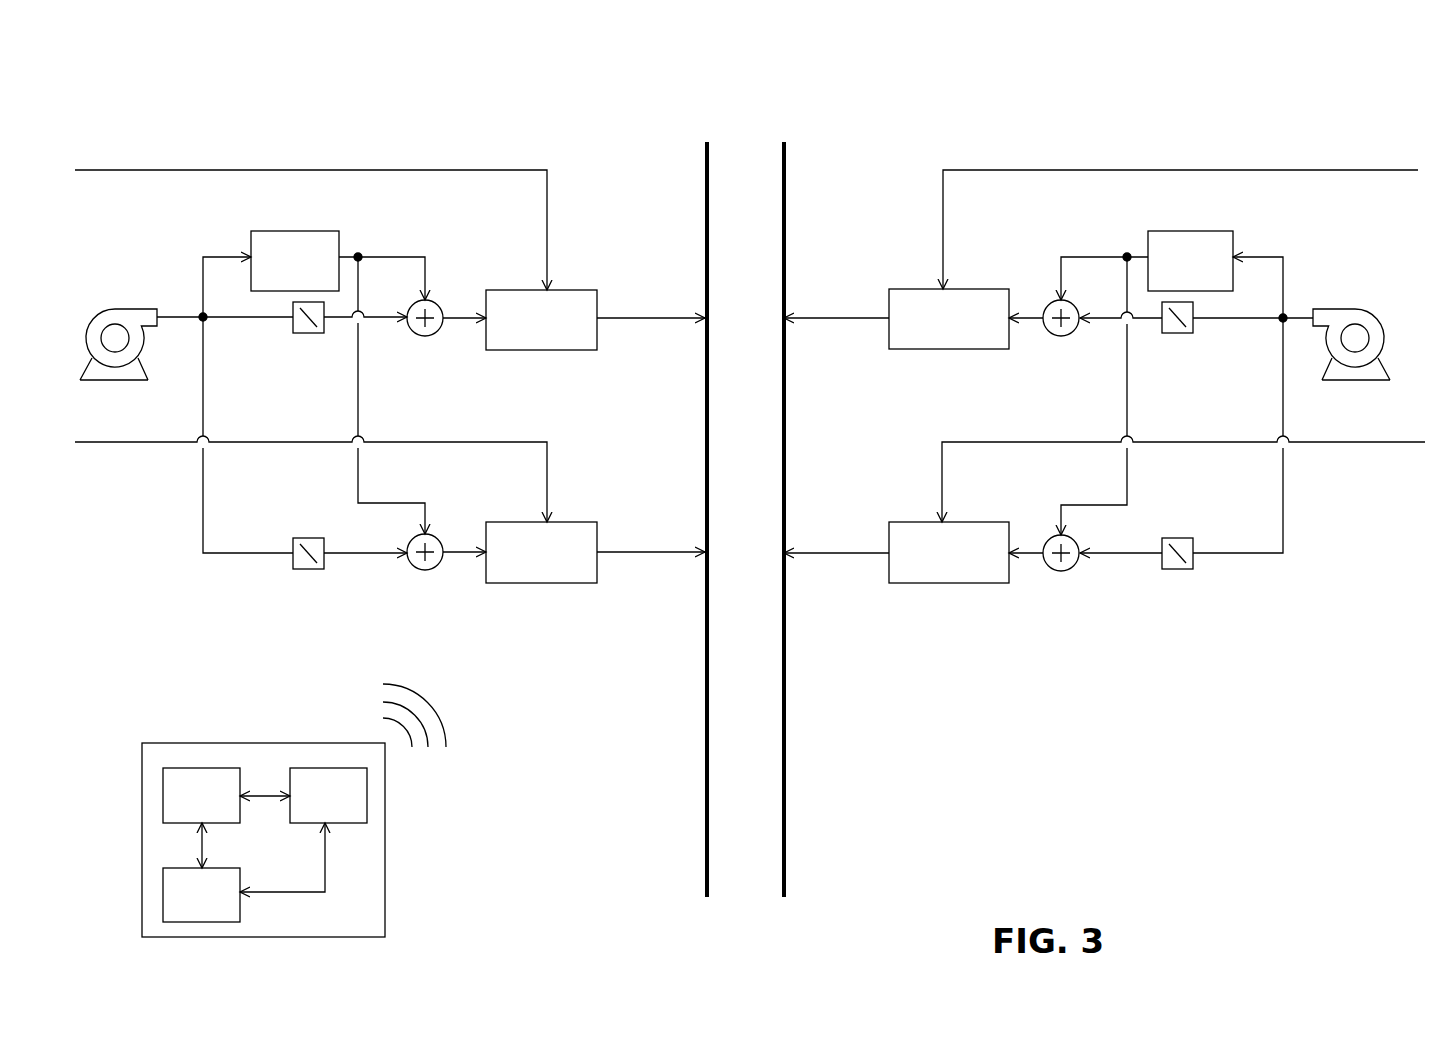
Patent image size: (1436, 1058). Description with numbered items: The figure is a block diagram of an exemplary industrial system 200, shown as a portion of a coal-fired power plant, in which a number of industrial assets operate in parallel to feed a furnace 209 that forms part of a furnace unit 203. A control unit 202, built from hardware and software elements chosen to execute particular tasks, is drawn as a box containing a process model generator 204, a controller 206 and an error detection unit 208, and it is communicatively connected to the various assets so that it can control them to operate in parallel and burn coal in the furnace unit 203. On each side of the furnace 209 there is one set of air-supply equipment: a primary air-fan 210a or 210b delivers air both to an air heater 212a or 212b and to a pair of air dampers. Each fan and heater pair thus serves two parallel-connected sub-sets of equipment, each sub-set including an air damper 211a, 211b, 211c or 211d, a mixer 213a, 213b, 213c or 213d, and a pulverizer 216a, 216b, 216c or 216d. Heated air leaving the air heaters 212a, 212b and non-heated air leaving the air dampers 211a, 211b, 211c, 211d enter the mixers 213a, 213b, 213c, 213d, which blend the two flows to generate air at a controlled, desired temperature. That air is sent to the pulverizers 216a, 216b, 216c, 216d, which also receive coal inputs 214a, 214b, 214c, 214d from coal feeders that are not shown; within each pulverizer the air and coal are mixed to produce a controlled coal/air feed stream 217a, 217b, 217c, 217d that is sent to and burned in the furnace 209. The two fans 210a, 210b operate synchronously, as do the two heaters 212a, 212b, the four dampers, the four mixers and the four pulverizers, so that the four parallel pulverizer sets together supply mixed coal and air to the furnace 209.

The industrial system 200 is at (1031, 82).
The control unit 202 is at (294, 810).
The furnace unit 203 is at (643, 852).
The process model generator 204 is at (201, 795).
The controller 206 is at (328, 795).
The error detection unit 208 is at (201, 895).
The furnace 209 is at (768, 795).
The primary air-fan 210a is at (113, 257).
The primary air-fan 210b is at (1340, 250).
The air damper 211a is at (293, 395).
The air damper 211b is at (326, 630).
The air damper 211c is at (1207, 393).
The air damper 211d is at (1178, 631).
The air heater 212a is at (322, 230).
The air heater 212b is at (1225, 230).
The mixer 213a is at (427, 366).
The mixer 213b is at (427, 601).
The mixer 213c is at (1071, 366).
The mixer 213d is at (1071, 601).
The coal input 214a is at (228, 142).
The coal input 214b is at (100, 478).
The coal input 214c is at (1307, 143).
The coal input 214d is at (1343, 478).
The pulverizer 216a is at (577, 290).
The pulverizer 216b is at (577, 522).
The pulverizer 216c is at (978, 289).
The pulverizer 216d is at (956, 585).
The mixed coal/air stream 217a is at (637, 350).
The mixed coal/air stream 217b is at (637, 584).
The mixed coal/air stream 217c is at (838, 350).
The mixed coal/air stream 217d is at (838, 585).